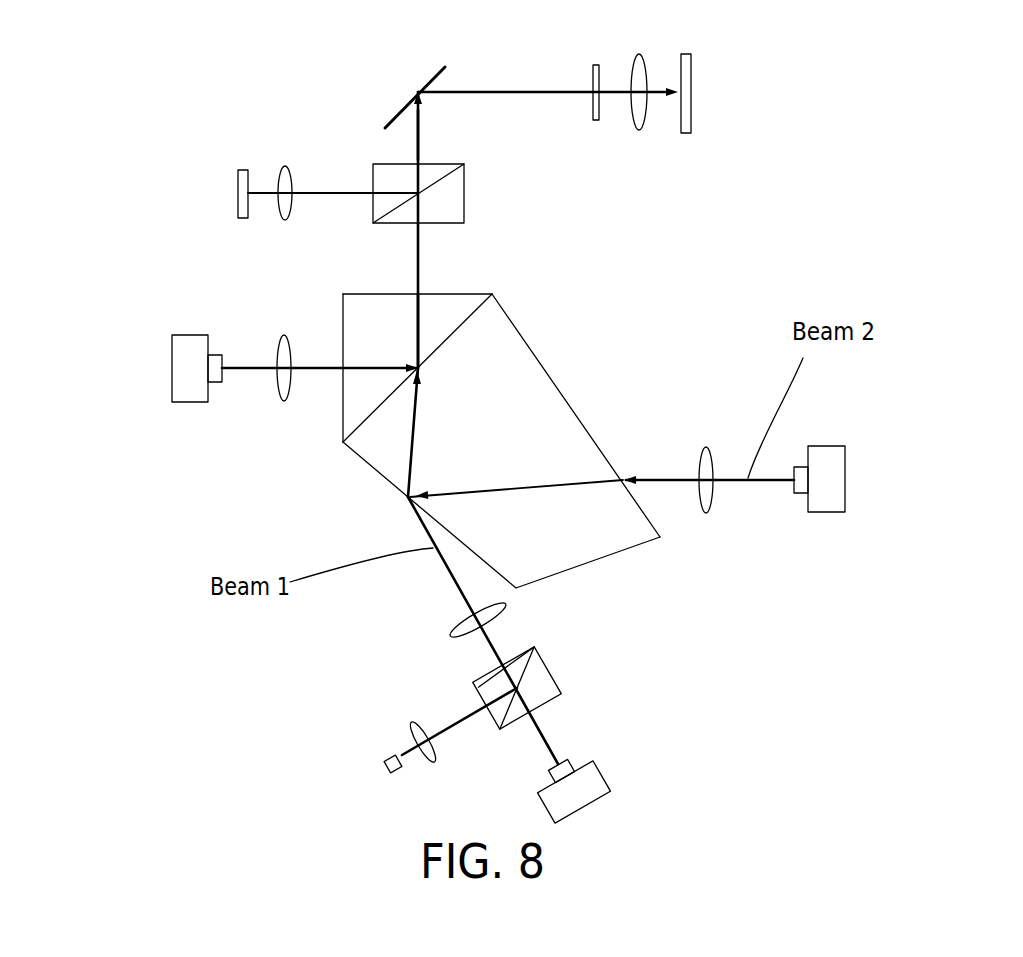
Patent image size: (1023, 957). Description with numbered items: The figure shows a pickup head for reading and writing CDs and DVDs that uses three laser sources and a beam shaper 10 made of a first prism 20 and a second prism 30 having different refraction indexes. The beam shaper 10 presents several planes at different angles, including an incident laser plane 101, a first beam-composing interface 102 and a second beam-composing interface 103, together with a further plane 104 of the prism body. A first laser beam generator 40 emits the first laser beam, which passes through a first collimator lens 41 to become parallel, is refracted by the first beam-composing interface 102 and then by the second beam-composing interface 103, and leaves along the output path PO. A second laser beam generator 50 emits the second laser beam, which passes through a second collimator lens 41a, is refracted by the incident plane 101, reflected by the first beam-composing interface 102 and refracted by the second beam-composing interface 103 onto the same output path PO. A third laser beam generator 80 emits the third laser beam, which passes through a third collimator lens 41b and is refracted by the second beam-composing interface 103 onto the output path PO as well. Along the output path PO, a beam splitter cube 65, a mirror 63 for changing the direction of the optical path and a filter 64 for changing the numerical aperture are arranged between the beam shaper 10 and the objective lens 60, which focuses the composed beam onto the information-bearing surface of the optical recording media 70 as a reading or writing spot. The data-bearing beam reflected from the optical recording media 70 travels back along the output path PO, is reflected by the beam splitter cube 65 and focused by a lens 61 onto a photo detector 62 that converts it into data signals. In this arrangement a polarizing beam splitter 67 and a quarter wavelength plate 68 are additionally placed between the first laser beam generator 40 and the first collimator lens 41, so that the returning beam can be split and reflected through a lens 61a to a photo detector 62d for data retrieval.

The beam shaper 10 is at (457, 381).
The first prism 20 is at (547, 441).
The second prism 30 is at (430, 310).
The first laser beam generator 40 is at (577, 800).
The first collimator lens 41 is at (463, 632).
The second collimator lens 41a is at (706, 506).
The third collimator lens 41b is at (287, 345).
The second laser beam generator 50 is at (848, 454).
The objective lens 60 is at (637, 86).
The lens 61 is at (283, 183).
The lens 61a is at (437, 748).
The photo detector 62 is at (238, 190).
The photo detector 62d is at (392, 757).
The mirror 63 is at (395, 112).
The filter 64 is at (592, 86).
The beam splitter cube 65 is at (465, 208).
The polarizing beam splitter 67 is at (553, 692).
The quarter wavelength plate 68 is at (537, 650).
The optical recording media 70 is at (690, 118).
The third laser beam generator 80 is at (180, 370).
The incident laser plane 101 is at (553, 377).
The first beam-composing interface 102 is at (357, 458).
The second beam-composing interface 103 is at (468, 320).
The prism surface 104 is at (372, 293).
The output path PO is at (423, 143).